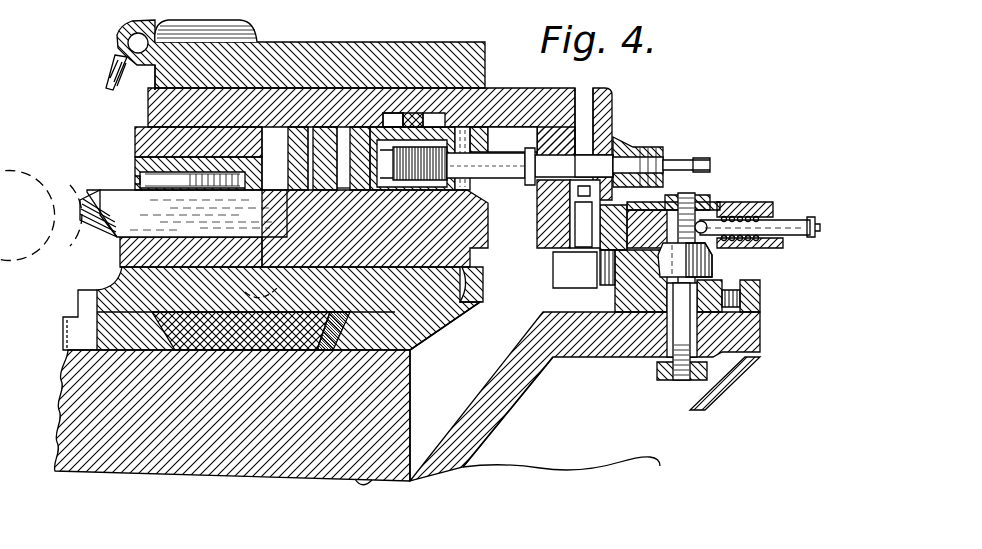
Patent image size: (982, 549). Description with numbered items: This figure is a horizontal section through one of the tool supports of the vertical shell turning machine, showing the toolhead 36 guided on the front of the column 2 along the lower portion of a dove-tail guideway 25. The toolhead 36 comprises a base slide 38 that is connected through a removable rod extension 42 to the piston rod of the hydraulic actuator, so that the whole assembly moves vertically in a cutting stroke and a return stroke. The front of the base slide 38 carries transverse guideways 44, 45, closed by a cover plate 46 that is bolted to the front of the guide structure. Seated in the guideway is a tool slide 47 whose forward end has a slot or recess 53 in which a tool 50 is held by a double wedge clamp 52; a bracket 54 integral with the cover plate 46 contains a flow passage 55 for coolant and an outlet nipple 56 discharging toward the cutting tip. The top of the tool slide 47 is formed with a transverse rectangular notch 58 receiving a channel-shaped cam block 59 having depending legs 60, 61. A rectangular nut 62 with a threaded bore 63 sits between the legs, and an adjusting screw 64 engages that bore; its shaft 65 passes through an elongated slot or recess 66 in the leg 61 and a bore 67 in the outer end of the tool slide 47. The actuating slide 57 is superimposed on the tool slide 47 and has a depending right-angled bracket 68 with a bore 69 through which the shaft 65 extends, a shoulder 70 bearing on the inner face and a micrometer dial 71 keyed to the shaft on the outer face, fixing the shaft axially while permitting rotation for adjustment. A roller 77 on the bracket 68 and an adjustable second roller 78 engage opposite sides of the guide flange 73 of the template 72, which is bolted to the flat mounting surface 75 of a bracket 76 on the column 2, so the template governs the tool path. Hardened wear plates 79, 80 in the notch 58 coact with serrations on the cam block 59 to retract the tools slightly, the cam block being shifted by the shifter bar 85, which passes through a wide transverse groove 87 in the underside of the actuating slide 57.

The vertical column 2 is at (292, 462).
The dove-tail guideway 25 is at (97, 291).
The toolhead 36 is at (133, 108).
The base slide 38 is at (443, 337).
The rod extension 42 is at (251, 331).
The guideway 44 is at (370, 127).
The guideway 45 is at (483, 305).
The cover plate 46 is at (335, 46).
The tool slide 47 is at (120, 258).
The tool 50 is at (85, 206).
The double wedge clamp 52 is at (137, 167).
The slot or recess 53 is at (203, 237).
The bracket 54 is at (255, 30).
The flow passage 55 is at (122, 38).
The outlet nipple 56 is at (108, 73).
The actuating slide 57 is at (509, 89).
The transverse rectangular notch 58 is at (375, 228).
The cam block 59 is at (349, 142).
The depending leg 60 is at (323, 213).
The depending leg 61 is at (439, 226).
The rectangular nut 62 is at (425, 194).
The threaded bore 63 is at (317, 148).
The adjusting screw 64 is at (398, 214).
The shaft 65 is at (510, 180).
The elongated slot or recess 66 is at (471, 105).
The bore 67 is at (516, 107).
The bracket 68 is at (600, 120).
The bore 69 is at (612, 215).
The shoulder 70 is at (530, 150).
The micrometer dial 71 is at (630, 137).
The cam or template 72 is at (636, 335).
The guide flange 73 is at (614, 294).
The flat mounting surface 75 is at (588, 316).
The bracket 76 is at (488, 428).
The roller 77 is at (553, 276).
The second roller 78 is at (712, 268).
The hardened wear plate 79 is at (300, 152).
The hardened wear plate 80 is at (511, 217).
The shifter bar 85 is at (413, 127).
The transverse groove 87 is at (393, 112).